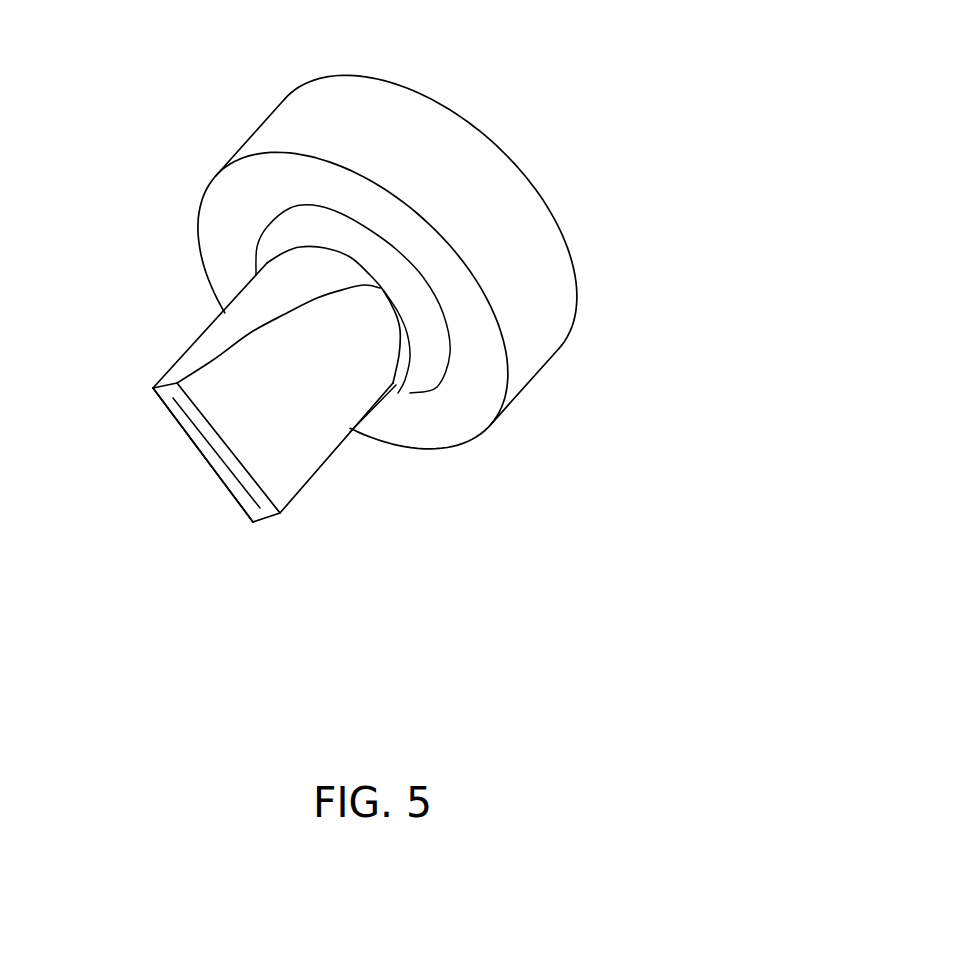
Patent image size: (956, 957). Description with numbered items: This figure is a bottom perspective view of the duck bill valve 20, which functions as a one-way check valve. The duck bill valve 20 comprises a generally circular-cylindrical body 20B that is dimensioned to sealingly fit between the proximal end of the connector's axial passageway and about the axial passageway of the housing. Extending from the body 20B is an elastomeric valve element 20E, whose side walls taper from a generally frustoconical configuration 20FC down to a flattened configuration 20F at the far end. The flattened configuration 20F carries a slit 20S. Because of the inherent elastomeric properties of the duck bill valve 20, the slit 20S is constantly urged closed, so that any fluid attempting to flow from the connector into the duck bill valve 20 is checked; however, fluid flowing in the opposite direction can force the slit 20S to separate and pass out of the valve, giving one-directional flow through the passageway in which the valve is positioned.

The duck bill valve 20 is at (384, 323).
The elastomeric valve element 20E is at (332, 345).
The circular-cylindrical body 20B is at (546, 370).
The frustoconical configuration 20FC is at (402, 383).
The flattened configuration 20F is at (296, 521).
The slit 20S is at (206, 457).